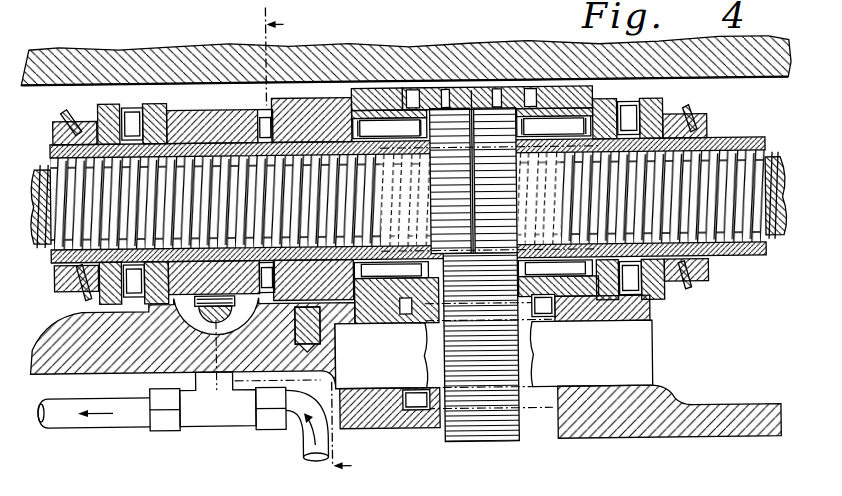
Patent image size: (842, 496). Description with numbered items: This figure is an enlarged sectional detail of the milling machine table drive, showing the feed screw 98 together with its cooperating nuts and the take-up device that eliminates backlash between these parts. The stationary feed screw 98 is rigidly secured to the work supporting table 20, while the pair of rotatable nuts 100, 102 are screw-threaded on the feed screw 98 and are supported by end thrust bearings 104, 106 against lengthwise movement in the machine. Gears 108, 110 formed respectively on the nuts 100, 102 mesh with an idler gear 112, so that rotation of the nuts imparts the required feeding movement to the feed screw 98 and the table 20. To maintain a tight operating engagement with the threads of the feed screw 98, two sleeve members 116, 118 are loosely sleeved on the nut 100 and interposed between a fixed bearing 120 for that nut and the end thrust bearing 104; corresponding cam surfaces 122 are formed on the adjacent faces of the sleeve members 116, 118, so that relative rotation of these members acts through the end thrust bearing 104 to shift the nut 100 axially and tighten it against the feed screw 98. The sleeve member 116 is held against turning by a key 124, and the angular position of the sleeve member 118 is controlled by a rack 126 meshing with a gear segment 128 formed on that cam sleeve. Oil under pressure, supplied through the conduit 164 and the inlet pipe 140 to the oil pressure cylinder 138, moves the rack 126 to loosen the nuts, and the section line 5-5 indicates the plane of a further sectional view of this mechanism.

The section line 5- 5 is at (316, 244).
The work supporting table 20 is at (98, 60).
The feed screw 98 is at (38, 250).
The nut 100 is at (50, 156).
The nut 102 is at (722, 263).
The end thrust bearing 104 is at (131, 116).
The end thrust bearing 106 is at (629, 116).
The gear 108 is at (453, 127).
The gear 110 is at (487, 128).
The idler gear 112 is at (493, 440).
The sleeve member 116 is at (325, 102).
The sleeve member 118 is at (208, 120).
The fixed bearing 120 is at (383, 104).
The cam surfaces 122 is at (267, 119).
The key 124 is at (310, 330).
The rack 126 is at (231, 316).
The gear segment 128 is at (201, 320).
The oil pressure cylinder 138 is at (224, 392).
The inlet pipe 140 is at (195, 384).
The conduit 164 is at (60, 417).